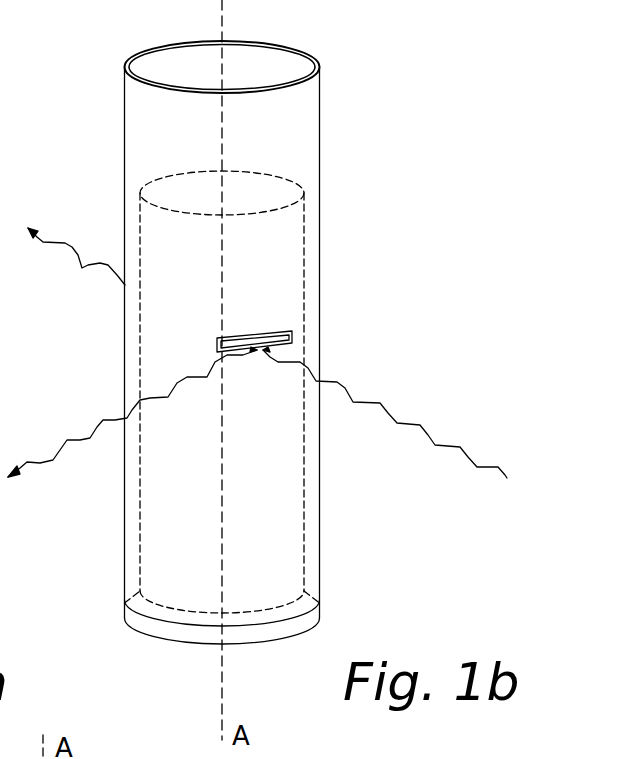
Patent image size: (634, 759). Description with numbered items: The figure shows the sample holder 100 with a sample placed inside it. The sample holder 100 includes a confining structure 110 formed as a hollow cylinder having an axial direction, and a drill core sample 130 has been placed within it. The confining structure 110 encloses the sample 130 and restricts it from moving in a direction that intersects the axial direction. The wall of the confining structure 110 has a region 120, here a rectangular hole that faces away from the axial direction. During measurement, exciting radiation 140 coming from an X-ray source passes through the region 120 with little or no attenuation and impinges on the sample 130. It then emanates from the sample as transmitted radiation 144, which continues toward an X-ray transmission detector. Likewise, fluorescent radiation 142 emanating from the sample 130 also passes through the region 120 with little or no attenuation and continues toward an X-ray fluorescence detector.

The sample holder 100 is at (286, 370).
The confining structure 110 is at (320, 240).
The region 120 is at (300, 338).
The drill core sample 130 is at (305, 510).
The exciting radiation 140 is at (422, 425).
The fluorescent radiation 142 is at (90, 440).
The transmitted radiation 144 is at (82, 268).